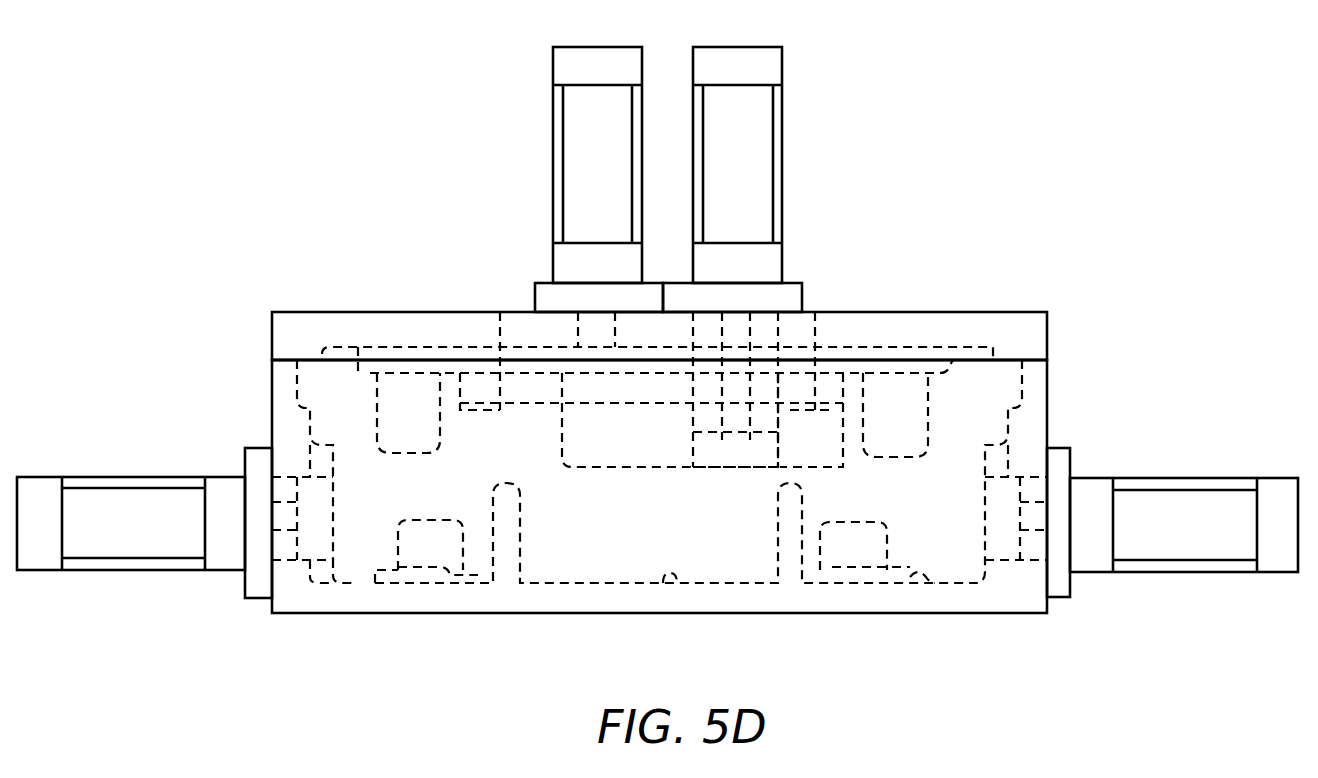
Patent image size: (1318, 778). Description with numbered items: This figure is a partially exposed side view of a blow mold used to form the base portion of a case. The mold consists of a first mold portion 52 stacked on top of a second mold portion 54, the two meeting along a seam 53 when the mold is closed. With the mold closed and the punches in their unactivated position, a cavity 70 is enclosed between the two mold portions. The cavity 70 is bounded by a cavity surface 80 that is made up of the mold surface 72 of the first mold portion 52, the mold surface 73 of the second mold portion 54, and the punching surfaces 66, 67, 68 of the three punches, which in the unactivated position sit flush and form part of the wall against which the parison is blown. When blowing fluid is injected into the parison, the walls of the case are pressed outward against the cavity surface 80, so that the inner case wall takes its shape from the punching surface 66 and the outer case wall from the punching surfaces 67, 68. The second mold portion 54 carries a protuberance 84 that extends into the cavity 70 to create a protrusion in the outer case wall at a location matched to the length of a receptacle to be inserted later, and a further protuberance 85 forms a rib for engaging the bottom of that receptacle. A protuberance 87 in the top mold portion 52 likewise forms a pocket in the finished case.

The first mold portion 52 is at (272, 331).
The seam 53 is at (272, 357).
The second mold portion 54 is at (272, 395).
The punching surface 66 is at (720, 468).
The punching surface 67 is at (332, 518).
The punching surface 68 is at (985, 513).
The cavity 70 is at (680, 544).
The mold surface 72 is at (562, 420).
The mold surface 73 is at (600, 583).
The cavity surface 80 is at (663, 583).
The protuberance 84 is at (772, 517).
The protuberance 85 is at (922, 572).
The protuberance 87 is at (937, 443).